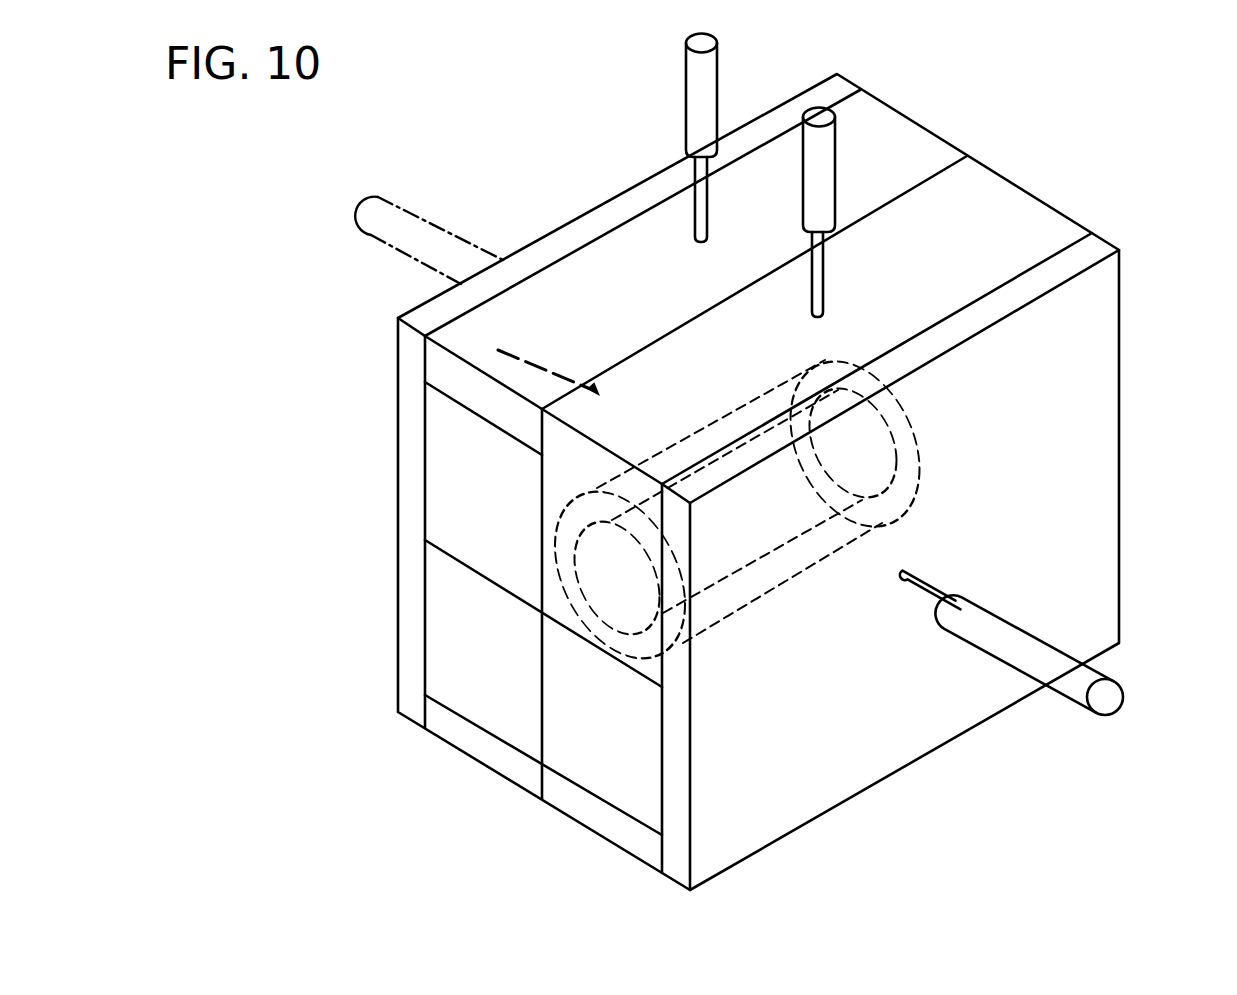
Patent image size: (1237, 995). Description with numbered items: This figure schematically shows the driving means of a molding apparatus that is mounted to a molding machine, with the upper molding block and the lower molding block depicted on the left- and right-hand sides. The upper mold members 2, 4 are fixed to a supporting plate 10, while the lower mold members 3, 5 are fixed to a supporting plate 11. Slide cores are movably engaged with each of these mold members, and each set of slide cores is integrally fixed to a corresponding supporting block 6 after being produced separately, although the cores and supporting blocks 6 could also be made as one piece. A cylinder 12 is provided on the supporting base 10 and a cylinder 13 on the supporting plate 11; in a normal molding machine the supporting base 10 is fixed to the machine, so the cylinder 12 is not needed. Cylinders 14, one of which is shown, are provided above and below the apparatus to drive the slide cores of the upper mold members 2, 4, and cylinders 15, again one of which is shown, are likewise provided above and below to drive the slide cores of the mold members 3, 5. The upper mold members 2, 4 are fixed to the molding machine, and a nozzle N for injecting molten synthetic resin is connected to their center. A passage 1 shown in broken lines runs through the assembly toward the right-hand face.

The neutron passage / beam hole 1 is at (923, 470).
The upper mold member 2 is at (448, 460).
The lower mold member 3 is at (553, 507).
The upper mold member 4 is at (460, 632).
The lower mold member 5 is at (557, 707).
The supporting block 6 is at (505, 317).
The supporting plate 10 is at (602, 217).
The supporting plate 11 is at (1087, 312).
The cylinder 12 is at (415, 212).
The cylinder 13 is at (1090, 675).
The cylinder 14 is at (698, 62).
The cylinder 15 is at (838, 157).
The nozzle N is at (597, 393).